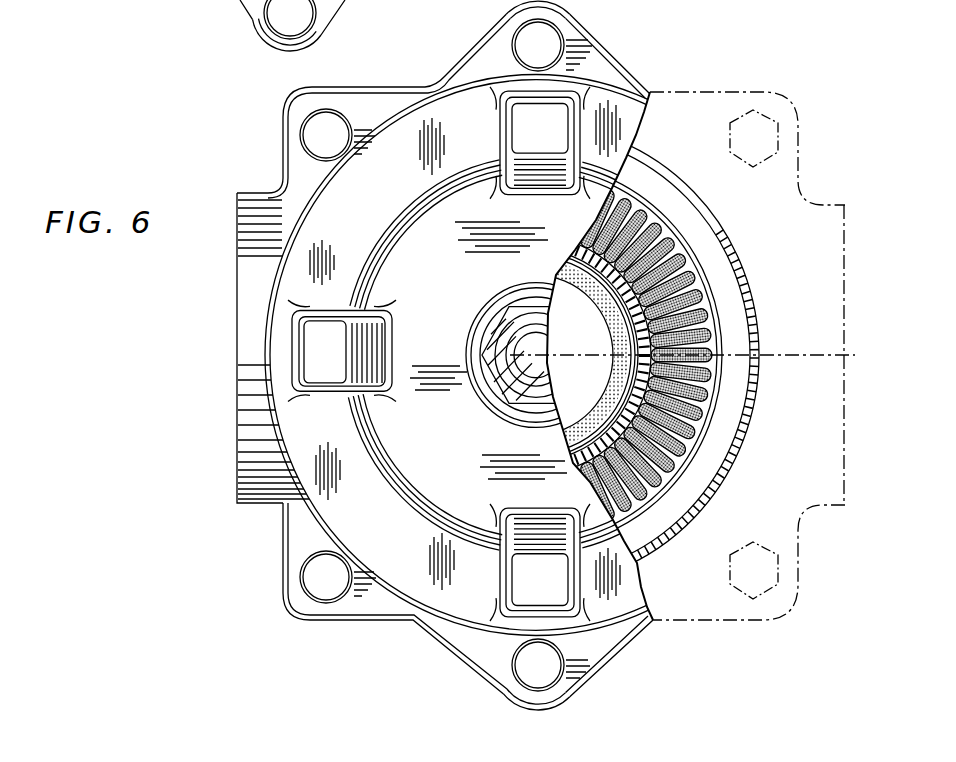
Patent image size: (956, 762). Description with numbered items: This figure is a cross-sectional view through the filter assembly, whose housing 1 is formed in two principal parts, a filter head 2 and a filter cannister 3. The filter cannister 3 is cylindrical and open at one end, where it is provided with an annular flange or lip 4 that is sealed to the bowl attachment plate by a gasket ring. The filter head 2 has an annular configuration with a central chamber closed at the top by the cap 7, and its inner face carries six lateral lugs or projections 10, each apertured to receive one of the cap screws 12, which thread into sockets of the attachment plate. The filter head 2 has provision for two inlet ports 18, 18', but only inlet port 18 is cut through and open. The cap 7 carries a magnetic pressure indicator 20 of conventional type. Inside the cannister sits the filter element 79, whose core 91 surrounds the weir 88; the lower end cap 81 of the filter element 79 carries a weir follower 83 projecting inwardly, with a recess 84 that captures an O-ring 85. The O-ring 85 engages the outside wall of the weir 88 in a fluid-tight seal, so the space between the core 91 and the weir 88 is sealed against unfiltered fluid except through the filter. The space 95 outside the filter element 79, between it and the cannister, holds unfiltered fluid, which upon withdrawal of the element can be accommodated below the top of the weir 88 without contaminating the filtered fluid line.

The housing 1 is at (658, 66).
The filter head 2 is at (133, 0).
The filter cannister 3 is at (748, 283).
The annular flange or lip 4 is at (203, 362).
The cap 7 is at (450, 312).
The lateral lugs or projections 10 is at (322, 38).
The cap screws 12 is at (267, 17).
The inlet port 18 is at (242, 348).
The inlet port 18' is at (791, 354).
The magnetic pressure indicator 20 is at (490, 382).
The filter element 79 is at (710, 418).
The end cap 81 is at (663, 227).
The weir follower 83 is at (568, 452).
The recess 84 is at (682, 359).
The O-ring 85 is at (610, 310).
The weir 88 is at (613, 390).
The core 91 is at (557, 280).
The space 95 is at (737, 337).